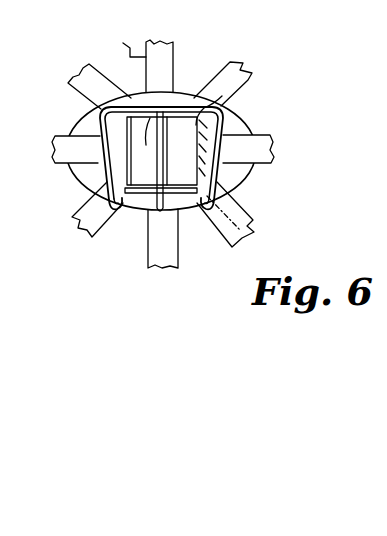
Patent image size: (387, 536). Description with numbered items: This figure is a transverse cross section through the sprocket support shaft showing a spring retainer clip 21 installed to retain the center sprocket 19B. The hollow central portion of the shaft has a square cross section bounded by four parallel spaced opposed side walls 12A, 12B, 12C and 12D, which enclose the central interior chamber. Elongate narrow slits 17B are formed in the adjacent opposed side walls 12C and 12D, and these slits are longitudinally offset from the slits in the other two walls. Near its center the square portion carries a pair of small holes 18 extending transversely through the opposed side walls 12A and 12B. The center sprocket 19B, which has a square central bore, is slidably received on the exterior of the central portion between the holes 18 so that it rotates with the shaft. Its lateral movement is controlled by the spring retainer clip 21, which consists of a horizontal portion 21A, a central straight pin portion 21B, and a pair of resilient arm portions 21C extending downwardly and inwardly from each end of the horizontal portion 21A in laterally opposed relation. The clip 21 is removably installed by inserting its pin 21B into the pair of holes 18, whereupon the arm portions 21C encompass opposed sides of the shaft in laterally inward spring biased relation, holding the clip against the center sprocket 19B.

The side wall 12A is at (183, 118).
The side wall 12B is at (143, 205).
The side wall 12C is at (130, 126).
The side wall 12D is at (200, 133).
The slits 17B is at (110, 162).
The holes 18 is at (141, 186).
The center sprocket 19B is at (113, 46).
The spring retainer clip 21 is at (85, 87).
The horizontal portion 21A is at (230, 82).
The central straight pin portion 21B is at (182, 212).
The resilient arm portions 21C is at (52, 148).